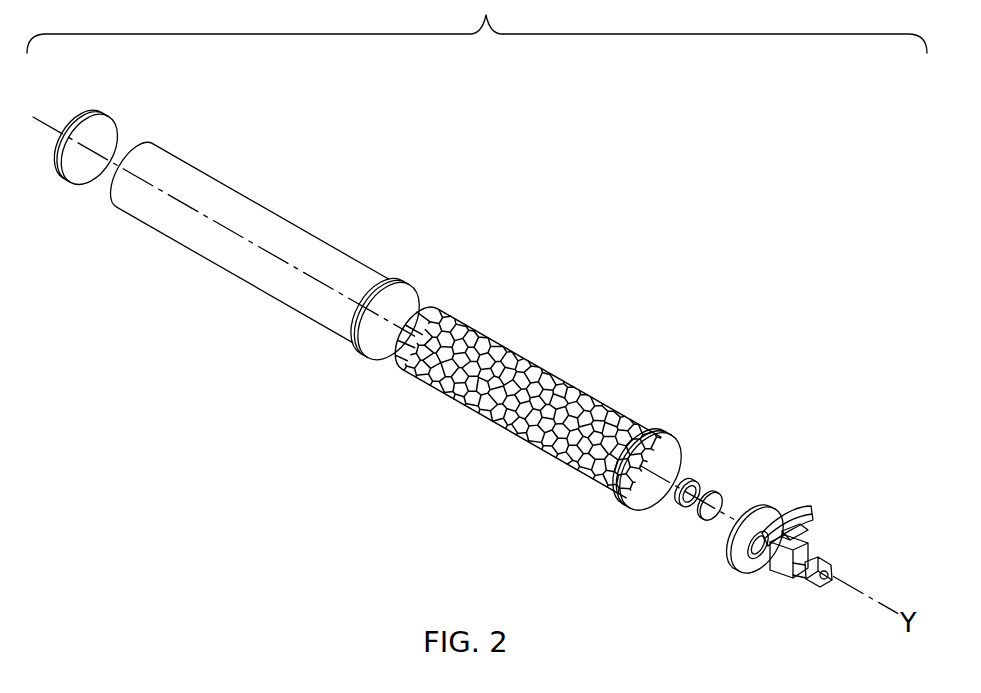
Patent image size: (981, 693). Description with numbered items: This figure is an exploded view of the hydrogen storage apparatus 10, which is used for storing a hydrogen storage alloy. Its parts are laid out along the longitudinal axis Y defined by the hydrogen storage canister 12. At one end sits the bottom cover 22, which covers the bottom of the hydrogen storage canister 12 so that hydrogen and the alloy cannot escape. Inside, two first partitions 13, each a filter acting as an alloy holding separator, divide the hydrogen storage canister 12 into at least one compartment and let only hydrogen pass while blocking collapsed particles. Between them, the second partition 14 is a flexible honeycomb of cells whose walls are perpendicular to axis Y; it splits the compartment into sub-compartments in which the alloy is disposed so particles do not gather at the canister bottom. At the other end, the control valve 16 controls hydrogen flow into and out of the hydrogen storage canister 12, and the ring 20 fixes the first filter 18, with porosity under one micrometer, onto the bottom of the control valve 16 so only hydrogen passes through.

The hydrogen storage apparatus 10 is at (523, 144).
The hydrogen storage canister 12 is at (317, 236).
The first partition 13 is at (410, 285).
The second partition 14 is at (522, 357).
The control valve 16 is at (818, 553).
The first filter 18 is at (727, 492).
The ring 20 is at (692, 472).
The bottom cover 22 is at (86, 110).